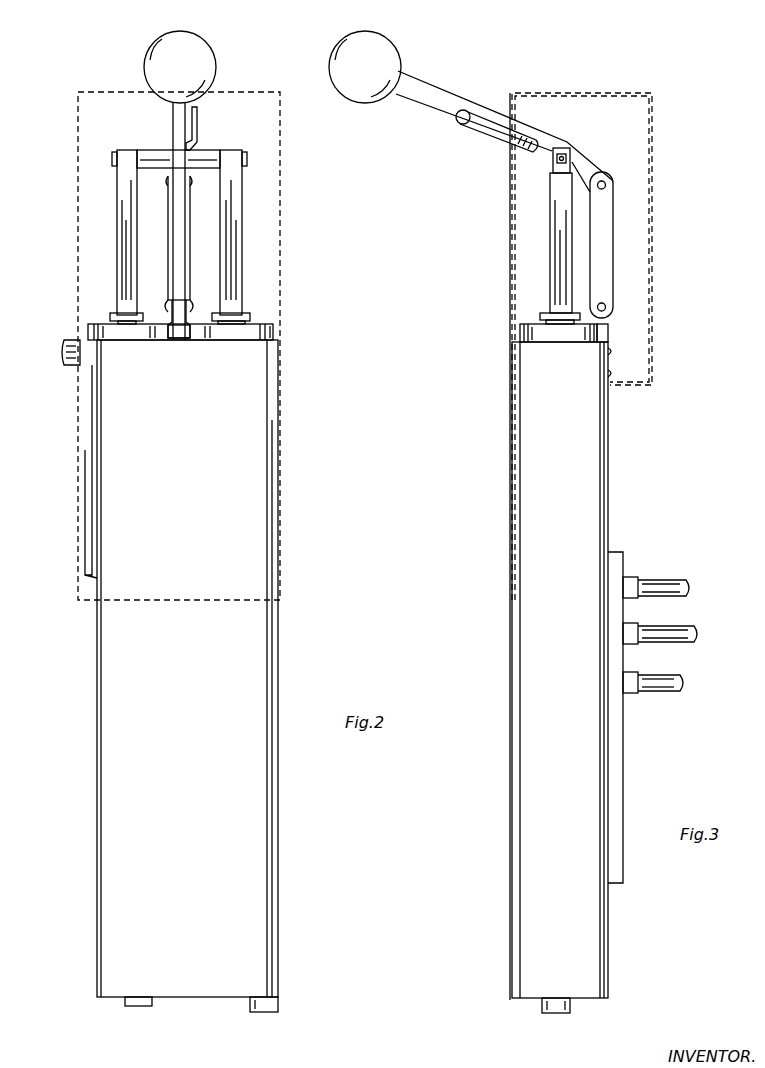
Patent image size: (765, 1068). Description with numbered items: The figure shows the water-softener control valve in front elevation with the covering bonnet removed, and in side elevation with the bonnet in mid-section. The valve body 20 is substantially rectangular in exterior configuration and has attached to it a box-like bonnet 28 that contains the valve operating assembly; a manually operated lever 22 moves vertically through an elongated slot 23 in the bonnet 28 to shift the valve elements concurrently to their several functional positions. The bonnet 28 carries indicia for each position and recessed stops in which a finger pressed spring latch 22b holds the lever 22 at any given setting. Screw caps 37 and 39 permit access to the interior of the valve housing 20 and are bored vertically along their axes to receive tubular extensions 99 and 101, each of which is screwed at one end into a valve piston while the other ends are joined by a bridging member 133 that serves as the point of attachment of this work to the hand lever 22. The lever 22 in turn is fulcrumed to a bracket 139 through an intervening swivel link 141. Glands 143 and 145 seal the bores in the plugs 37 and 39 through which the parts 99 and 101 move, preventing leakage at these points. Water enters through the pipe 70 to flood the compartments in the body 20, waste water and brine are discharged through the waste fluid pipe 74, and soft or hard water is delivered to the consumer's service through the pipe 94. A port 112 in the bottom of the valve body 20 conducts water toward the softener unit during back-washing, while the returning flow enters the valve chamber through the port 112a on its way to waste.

In FIG. 2, the valve body 20 is at (290, 651).
In FIG. 2, the manually operated lever 22 is at (172, 126).
In FIG. 3, the manually operated lever 22 is at (432, 86).
In FIG. 2, the finger pressed spring latch 22b is at (198, 112).
In FIG. 3, the finger pressed spring latch 22b is at (483, 112).
In FIG. 3, the elongated slot 23 is at (510, 233).
In FIG. 2, the bonnet 28 is at (282, 172).
In FIG. 3, the bonnet 28 is at (655, 136).
In FIG. 2, the screw cap 37 is at (88, 326).
In FIG. 2, the screw plug 39 is at (272, 330).
In FIG. 3, the screw plug 39 is at (520, 327).
In FIG. 3, the pipe 70 is at (684, 580).
In FIG. 3, the waste fluid pipe 74 is at (684, 626).
In FIG. 3, the pipe 94 is at (680, 676).
In FIG. 2, the tubular extension 99 is at (117, 219).
In FIG. 2, the tubular extension 101 is at (243, 205).
In FIG. 3, the tubular extension 101 is at (550, 252).
In FIG. 2, the port 112 is at (280, 1011).
In FIG. 3, the port 112 is at (580, 1013).
In FIG. 2, the port 112a is at (66, 352).
In FIG. 2, the bridging member 133 is at (210, 150).
In FIG. 2, the bracket 139 is at (180, 338).
In FIG. 3, the bracket 139 is at (605, 330).
In FIG. 2, the swivel link 141 is at (182, 250).
In FIG. 3, the swivel link 141 is at (613, 262).
In FIG. 2, the gland 143 is at (110, 315).
In FIG. 2, the gland 145 is at (248, 313).
In FIG. 3, the gland 145 is at (540, 314).